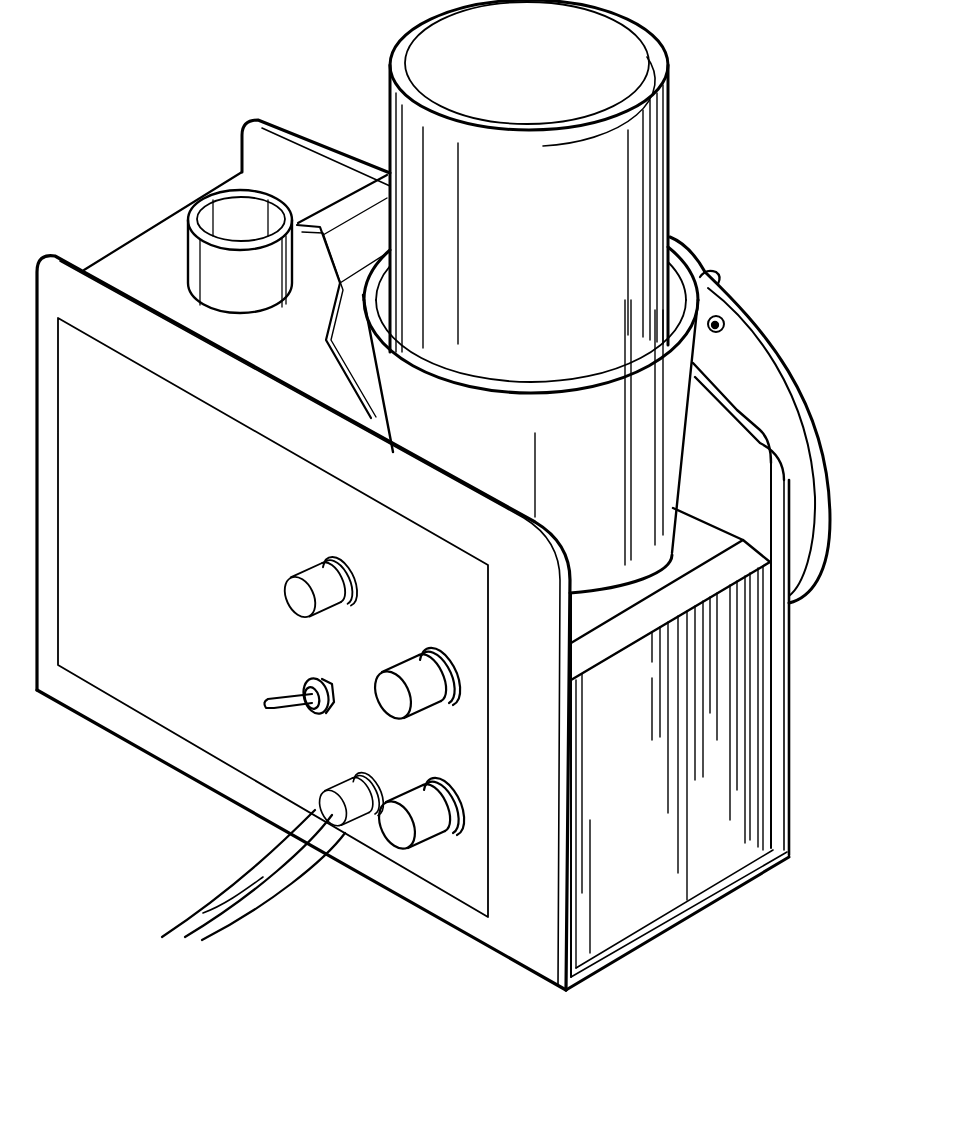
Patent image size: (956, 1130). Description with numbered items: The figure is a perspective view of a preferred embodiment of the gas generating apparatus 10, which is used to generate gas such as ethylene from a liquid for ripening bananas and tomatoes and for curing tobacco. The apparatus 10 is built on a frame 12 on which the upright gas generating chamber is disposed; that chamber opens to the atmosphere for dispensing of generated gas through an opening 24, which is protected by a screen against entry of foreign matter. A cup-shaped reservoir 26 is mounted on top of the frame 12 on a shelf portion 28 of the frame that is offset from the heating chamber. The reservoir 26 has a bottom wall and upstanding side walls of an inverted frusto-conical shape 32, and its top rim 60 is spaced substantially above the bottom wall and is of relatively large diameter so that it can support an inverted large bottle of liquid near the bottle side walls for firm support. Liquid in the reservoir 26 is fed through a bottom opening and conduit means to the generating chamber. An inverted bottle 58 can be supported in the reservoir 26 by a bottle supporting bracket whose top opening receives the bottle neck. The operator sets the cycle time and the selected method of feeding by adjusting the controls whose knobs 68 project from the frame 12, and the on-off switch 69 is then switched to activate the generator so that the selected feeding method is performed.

The gas generating apparatus 10 is at (796, 626).
The frame 12 is at (788, 727).
The opening 24 is at (214, 207).
The cup-shaped reservoir 26 is at (672, 483).
The shelf portion 28 is at (668, 562).
The inverted frusto-conical shape 32 is at (602, 480).
The inverted bottle 58 is at (560, 242).
The top rim 60 is at (698, 264).
The knobs 68 is at (428, 706).
The on-off switch 69 is at (290, 718).